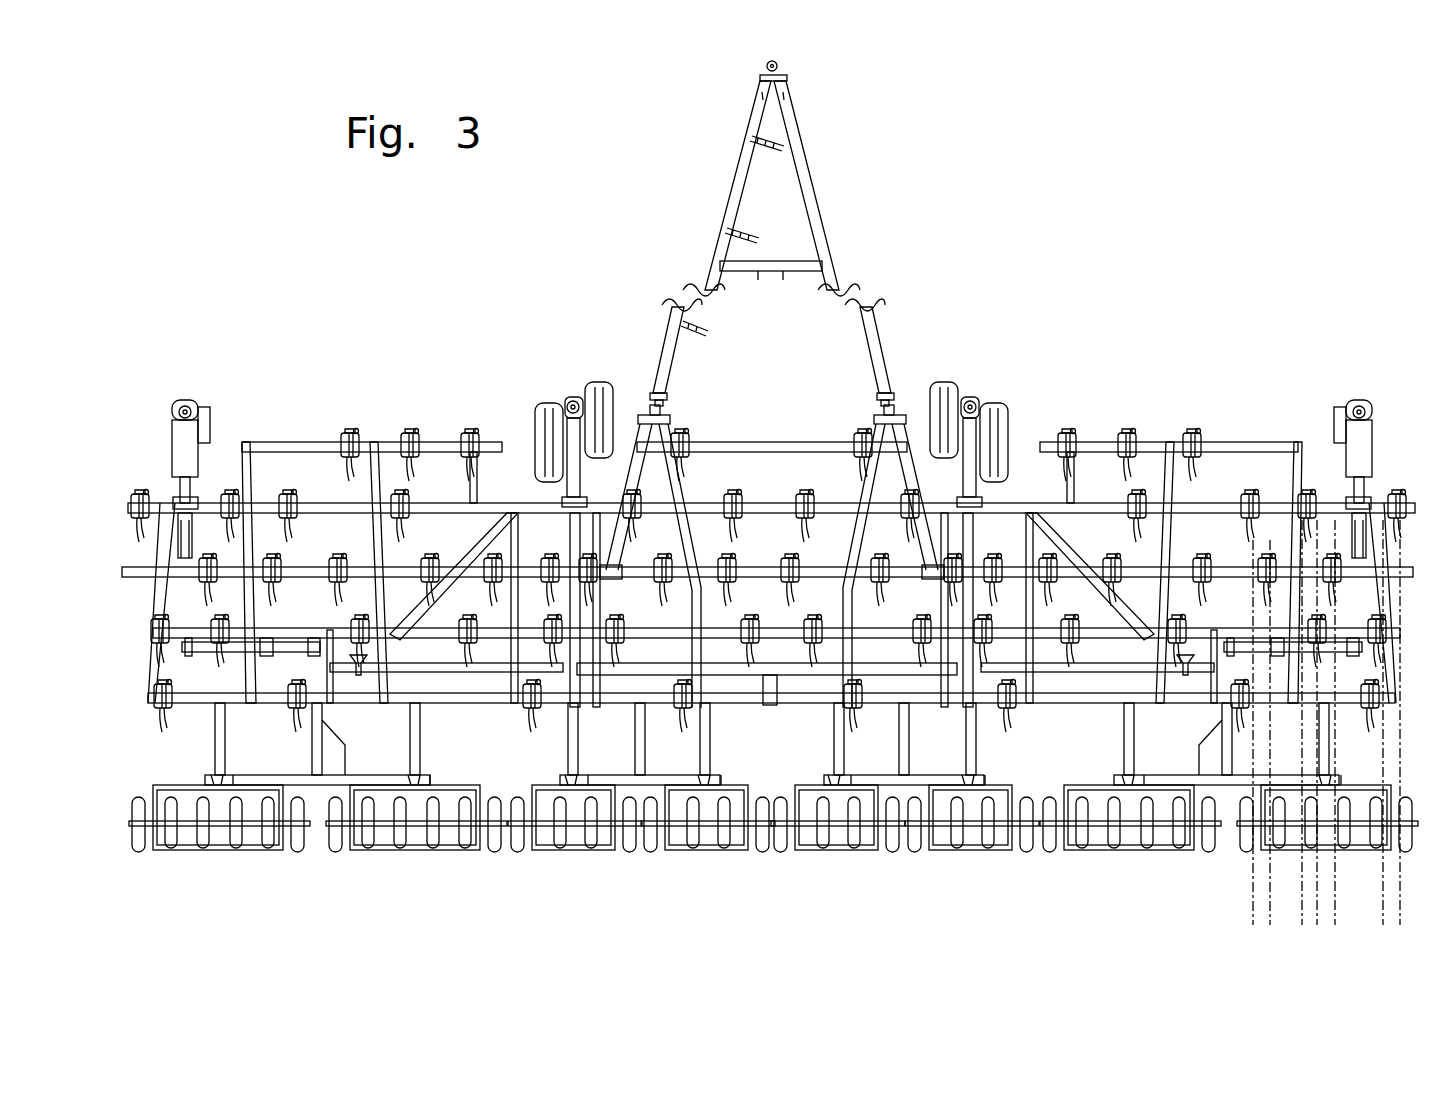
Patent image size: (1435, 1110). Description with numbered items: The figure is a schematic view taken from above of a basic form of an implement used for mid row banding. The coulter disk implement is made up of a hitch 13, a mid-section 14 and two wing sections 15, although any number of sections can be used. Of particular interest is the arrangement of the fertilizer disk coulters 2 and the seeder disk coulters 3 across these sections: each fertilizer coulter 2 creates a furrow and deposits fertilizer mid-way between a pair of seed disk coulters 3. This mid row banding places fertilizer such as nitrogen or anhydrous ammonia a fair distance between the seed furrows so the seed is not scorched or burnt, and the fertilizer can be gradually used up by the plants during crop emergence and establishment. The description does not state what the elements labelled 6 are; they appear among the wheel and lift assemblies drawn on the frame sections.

The fertilizer disk coulter 2 is at (1295, 570).
The seeder disk coulter 3 is at (1308, 610).
The hydraulic lift cylinder with wheel 6 is at (192, 400).
The hitch 13 is at (820, 191).
The mid-section 14 is at (765, 442).
The wing section 15 is at (283, 442).